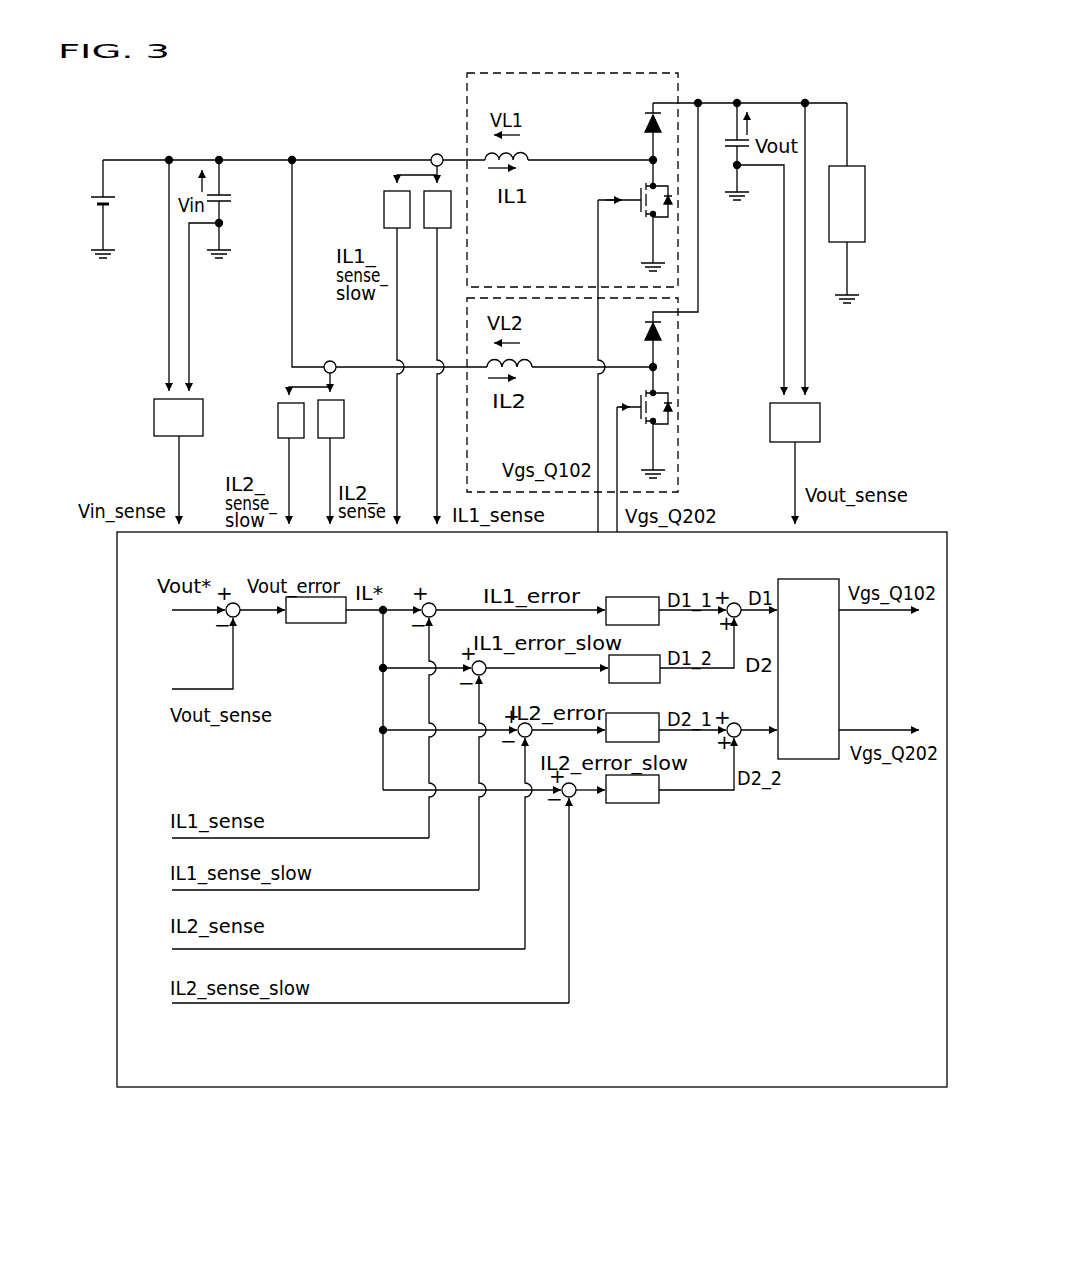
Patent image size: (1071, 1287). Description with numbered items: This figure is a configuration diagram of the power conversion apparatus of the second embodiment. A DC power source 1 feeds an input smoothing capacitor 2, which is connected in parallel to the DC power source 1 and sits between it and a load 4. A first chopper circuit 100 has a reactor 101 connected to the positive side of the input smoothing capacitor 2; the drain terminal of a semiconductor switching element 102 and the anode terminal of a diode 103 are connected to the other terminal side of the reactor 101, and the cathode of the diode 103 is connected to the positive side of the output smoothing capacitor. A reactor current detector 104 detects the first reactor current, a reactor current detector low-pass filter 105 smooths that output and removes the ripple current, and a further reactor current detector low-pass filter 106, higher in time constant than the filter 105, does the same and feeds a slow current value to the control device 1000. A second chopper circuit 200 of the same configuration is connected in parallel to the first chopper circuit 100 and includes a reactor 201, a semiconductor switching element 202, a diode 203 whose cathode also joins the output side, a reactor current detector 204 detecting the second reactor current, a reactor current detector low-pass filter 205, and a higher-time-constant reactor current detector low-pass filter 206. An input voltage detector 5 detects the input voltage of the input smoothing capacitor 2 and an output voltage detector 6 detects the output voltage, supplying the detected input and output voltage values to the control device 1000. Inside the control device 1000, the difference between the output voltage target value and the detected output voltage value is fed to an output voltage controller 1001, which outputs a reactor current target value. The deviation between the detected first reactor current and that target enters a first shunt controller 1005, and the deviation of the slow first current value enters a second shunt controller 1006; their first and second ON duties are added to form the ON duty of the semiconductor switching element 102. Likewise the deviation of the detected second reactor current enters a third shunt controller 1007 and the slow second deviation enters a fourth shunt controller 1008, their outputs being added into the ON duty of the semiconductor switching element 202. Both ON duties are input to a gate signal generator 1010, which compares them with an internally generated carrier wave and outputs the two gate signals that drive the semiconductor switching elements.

The DC power source 1 is at (98, 216).
The input smoothing capacitor 2 is at (223, 197).
The load 4 is at (865, 192).
The input voltage detector 5 is at (204, 405).
The output voltage detector 6 is at (822, 412).
The first chopper circuit 100 is at (678, 80).
The reactor 101 is at (530, 158).
The semiconductor switching element 102 is at (680, 205).
The diode 103 is at (644, 121).
The reactor current detector 104 is at (433, 154).
The reactor current detector low-pass filter 105 is at (452, 218).
The reactor current detector low-pass filter 106 is at (384, 211).
The second chopper circuit 200 is at (702, 482).
The reactor 201 is at (532, 362).
The semiconductor switching element 202 is at (663, 392).
The diode 203 is at (665, 337).
The reactor current detector 204 is at (328, 364).
The reactor current detector low-pass filter 205 is at (345, 428).
The reactor current detector low-pass filter 206 is at (278, 442).
The control device 1000 is at (450, 1093).
The output voltage controller 1001 is at (303, 624).
The first shunt controller 1005 is at (618, 596).
The second shunt controller 1006 is at (643, 653).
The third shunt controller 1007 is at (638, 712).
The fourth shunt controller 1008 is at (633, 806).
The gate signal generator 1010 is at (820, 760).